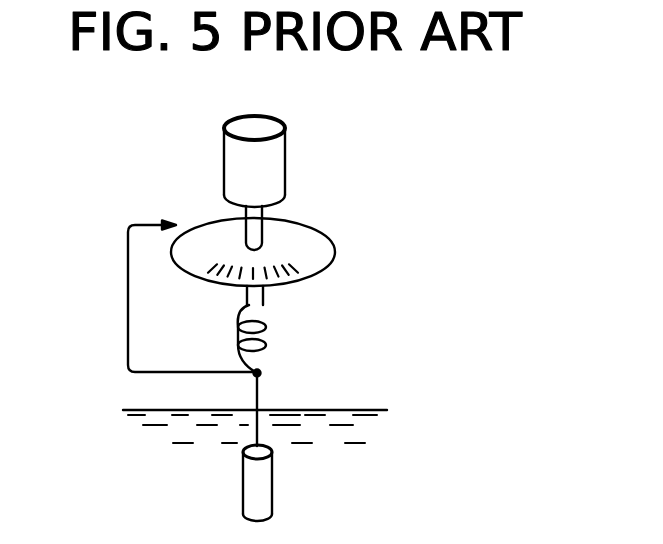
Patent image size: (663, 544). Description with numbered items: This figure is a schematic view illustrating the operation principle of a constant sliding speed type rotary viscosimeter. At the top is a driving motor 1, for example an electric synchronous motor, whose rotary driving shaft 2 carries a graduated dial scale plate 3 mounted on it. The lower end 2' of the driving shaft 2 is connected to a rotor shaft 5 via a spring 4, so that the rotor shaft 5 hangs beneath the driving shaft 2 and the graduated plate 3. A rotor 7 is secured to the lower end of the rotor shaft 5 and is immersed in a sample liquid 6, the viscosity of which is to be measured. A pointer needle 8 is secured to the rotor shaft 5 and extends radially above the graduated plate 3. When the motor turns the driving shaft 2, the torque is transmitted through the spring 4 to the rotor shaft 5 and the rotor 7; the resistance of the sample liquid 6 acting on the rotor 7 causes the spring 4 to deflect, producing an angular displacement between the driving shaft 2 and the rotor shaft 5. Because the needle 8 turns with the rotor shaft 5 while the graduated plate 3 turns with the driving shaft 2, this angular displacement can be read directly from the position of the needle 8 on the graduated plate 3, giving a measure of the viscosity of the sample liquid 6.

The motor 1 is at (277, 153).
The rotary driving shaft 2 is at (221, 206).
The lower end of the driving shaft 2' is at (298, 309).
The graduated dial scale plate 3 is at (327, 255).
The spring 4 is at (267, 345).
The rotor shaft 5 is at (258, 385).
The sample liquid 6 is at (175, 427).
The rotor 7 is at (272, 483).
The pointer needle 8 is at (130, 222).